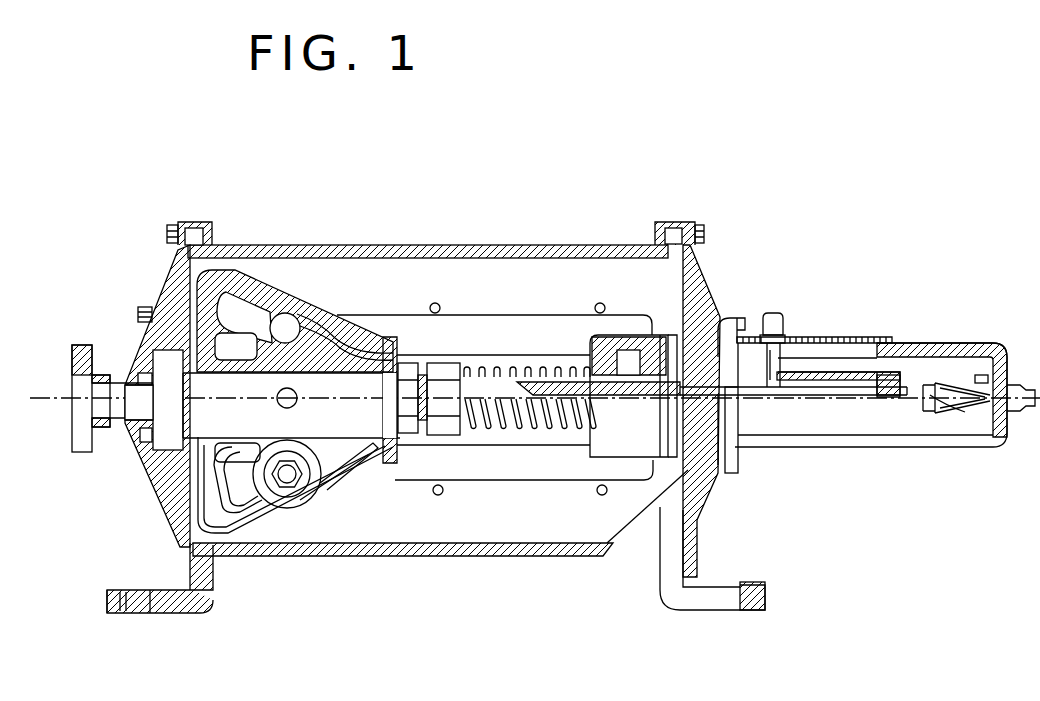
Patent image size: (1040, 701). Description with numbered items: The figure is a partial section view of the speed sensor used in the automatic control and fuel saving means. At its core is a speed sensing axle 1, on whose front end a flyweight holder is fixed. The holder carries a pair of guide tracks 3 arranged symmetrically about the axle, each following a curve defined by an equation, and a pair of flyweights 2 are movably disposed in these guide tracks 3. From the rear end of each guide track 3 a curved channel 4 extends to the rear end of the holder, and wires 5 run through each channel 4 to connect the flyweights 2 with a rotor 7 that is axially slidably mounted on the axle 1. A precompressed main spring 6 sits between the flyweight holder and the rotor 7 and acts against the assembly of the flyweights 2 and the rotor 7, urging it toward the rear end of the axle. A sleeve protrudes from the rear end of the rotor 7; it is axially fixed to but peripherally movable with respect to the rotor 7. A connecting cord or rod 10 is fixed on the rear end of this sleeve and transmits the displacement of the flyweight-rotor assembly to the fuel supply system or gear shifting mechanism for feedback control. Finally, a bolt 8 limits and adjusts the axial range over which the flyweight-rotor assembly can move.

The speed sensing axle 1 is at (120, 388).
The flyweights 2 is at (268, 315).
The guide tracks 3 is at (291, 323).
The curved channel 4 is at (295, 315).
The wires 5 is at (466, 355).
The main spring 6 is at (487, 366).
The rotor 7 is at (600, 440).
The bolt 8 is at (782, 333).
The connecting cord or rod 10 is at (840, 393).